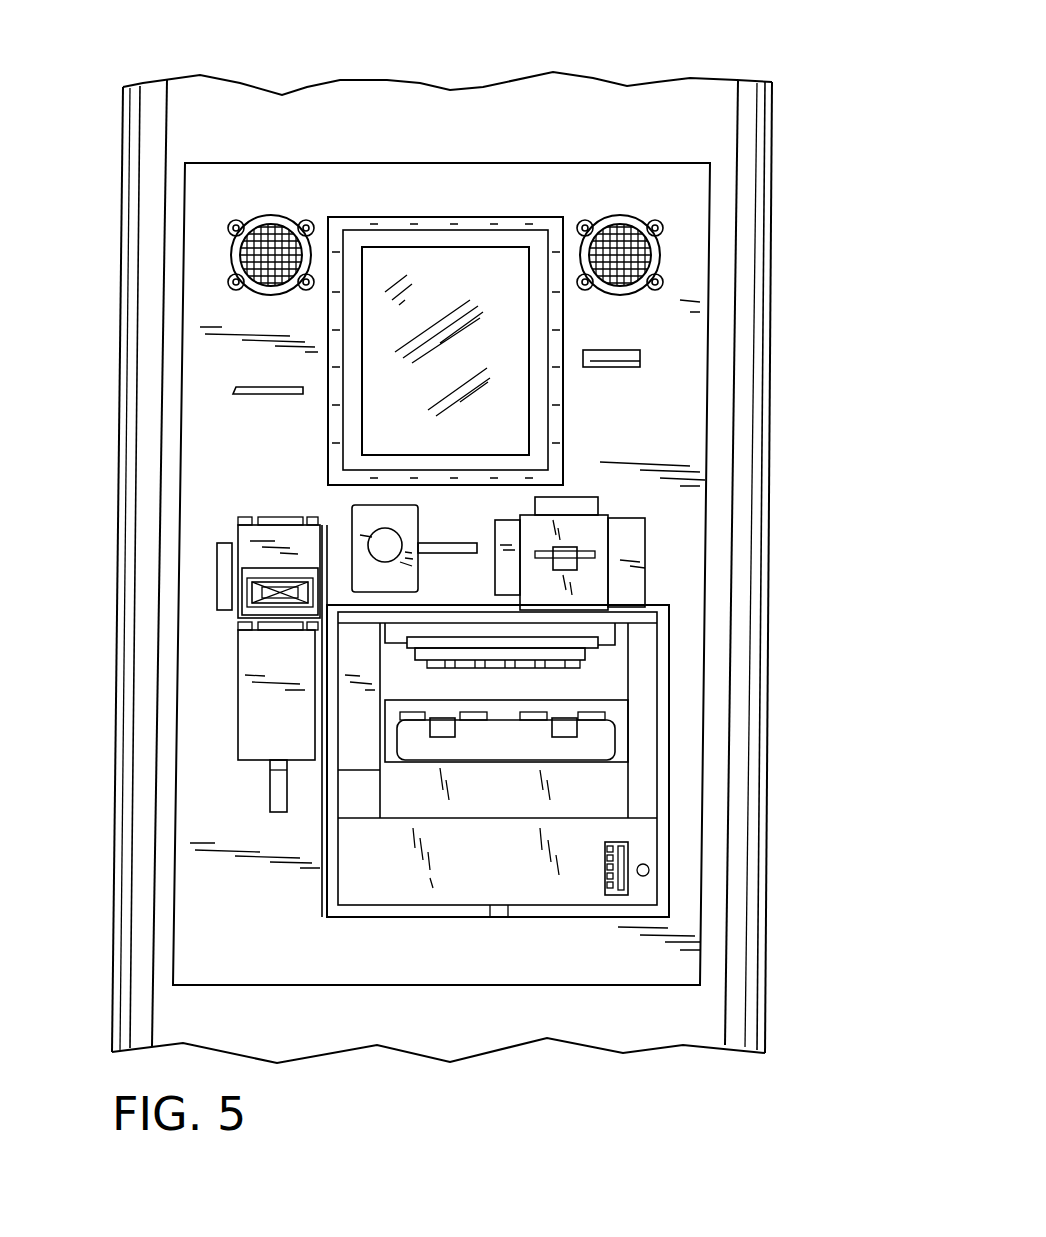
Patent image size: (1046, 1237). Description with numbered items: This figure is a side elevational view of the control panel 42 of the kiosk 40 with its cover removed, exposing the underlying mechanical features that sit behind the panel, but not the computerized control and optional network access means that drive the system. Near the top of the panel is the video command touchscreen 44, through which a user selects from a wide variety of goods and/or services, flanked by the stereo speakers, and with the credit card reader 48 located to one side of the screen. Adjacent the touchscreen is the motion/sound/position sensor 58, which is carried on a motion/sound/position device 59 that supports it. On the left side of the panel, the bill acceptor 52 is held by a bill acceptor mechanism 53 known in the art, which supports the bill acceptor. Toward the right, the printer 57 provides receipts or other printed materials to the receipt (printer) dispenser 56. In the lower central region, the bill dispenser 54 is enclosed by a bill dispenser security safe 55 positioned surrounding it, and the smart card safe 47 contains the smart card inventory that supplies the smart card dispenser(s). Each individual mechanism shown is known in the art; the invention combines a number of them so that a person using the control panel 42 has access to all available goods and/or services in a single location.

The kiosk 40 is at (596, 71).
The control panel 42 is at (740, 470).
The video command touchscreen 44 is at (487, 433).
The smart card safe 47 is at (638, 833).
The credit card reader 48 is at (640, 362).
The bill acceptor 52 is at (250, 593).
The bill acceptor mechanism 53 is at (258, 543).
The bill dispenser 54 is at (643, 732).
The bill dispenser security safe 55 is at (608, 687).
The receipt (printer) dispenser 56 is at (595, 552).
The printer 57 is at (592, 595).
The motion/sound/position sensor 58 is at (375, 532).
The motion/sound/position device 59 is at (408, 572).